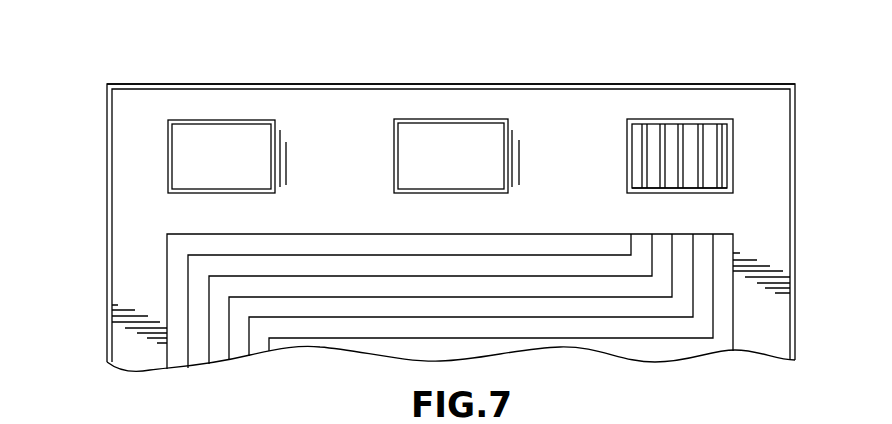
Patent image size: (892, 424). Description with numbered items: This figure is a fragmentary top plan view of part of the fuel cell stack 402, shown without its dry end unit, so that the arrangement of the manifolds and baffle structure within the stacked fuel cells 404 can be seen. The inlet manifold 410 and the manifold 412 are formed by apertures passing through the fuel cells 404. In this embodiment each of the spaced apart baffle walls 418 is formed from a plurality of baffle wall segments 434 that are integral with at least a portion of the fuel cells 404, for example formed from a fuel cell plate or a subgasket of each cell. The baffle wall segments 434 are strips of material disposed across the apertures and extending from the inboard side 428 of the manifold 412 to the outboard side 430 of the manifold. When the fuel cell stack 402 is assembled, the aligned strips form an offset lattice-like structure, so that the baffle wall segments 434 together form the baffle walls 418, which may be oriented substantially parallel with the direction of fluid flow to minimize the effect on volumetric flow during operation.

The fuel cell stack 402 is at (173, 57).
The fuel cells 404 is at (143, 143).
The inlet manifold 410 is at (240, 163).
The manifold 412 is at (652, 120).
The spaced apart baffle walls 418 is at (642, 155).
The inboard side 428 is at (652, 190).
The outboard side 430 is at (706, 122).
The baffle wall segments 434 is at (680, 132).